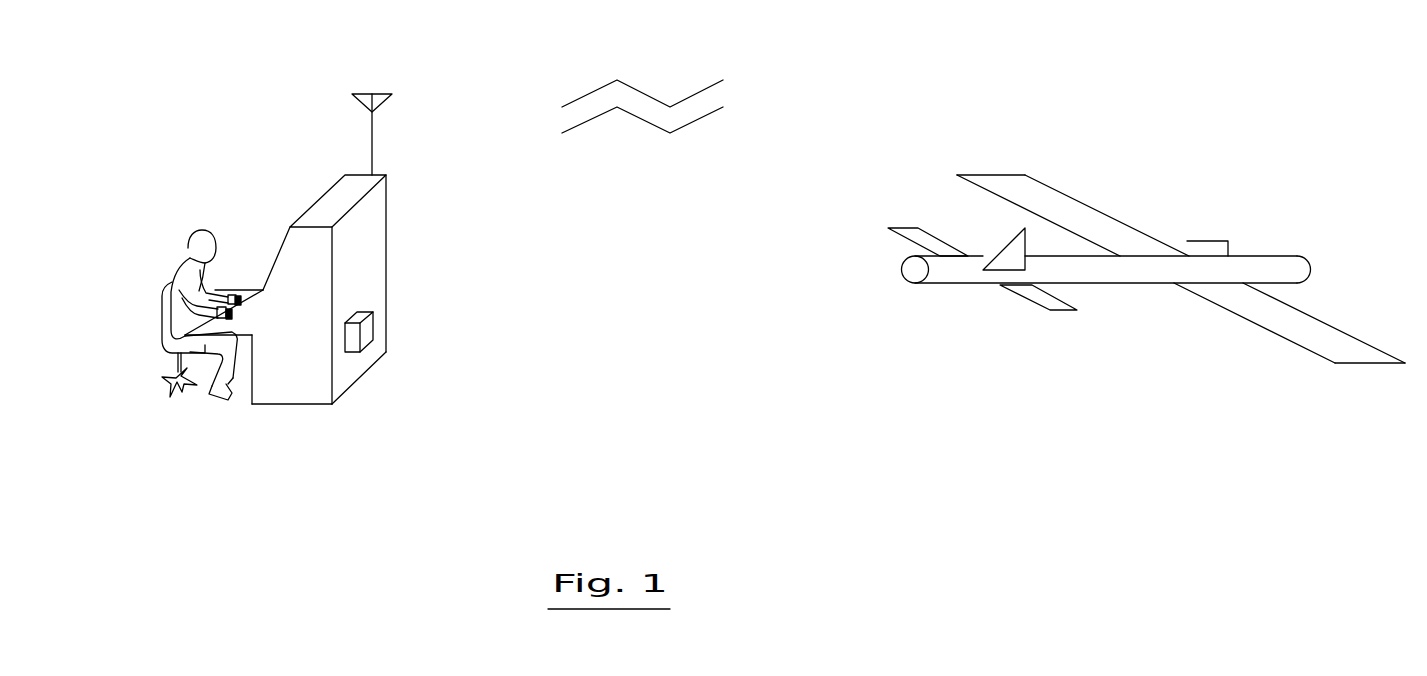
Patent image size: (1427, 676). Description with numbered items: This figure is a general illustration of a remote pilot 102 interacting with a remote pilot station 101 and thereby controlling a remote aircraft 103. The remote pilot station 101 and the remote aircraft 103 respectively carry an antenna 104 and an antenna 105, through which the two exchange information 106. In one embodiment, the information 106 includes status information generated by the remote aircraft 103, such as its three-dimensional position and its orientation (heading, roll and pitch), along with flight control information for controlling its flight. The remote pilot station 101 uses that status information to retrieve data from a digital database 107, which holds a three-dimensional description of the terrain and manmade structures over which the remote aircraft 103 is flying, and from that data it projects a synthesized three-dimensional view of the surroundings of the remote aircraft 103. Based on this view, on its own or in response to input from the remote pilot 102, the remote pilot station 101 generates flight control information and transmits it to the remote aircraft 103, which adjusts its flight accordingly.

The remote pilot station 101 is at (318, 187).
The remote pilot 102 is at (183, 240).
The remote aircraft 103 is at (955, 285).
The antenna 104 is at (372, 80).
The antenna 105 is at (1215, 228).
The information 106 is at (643, 80).
The digital database 107 is at (373, 352).